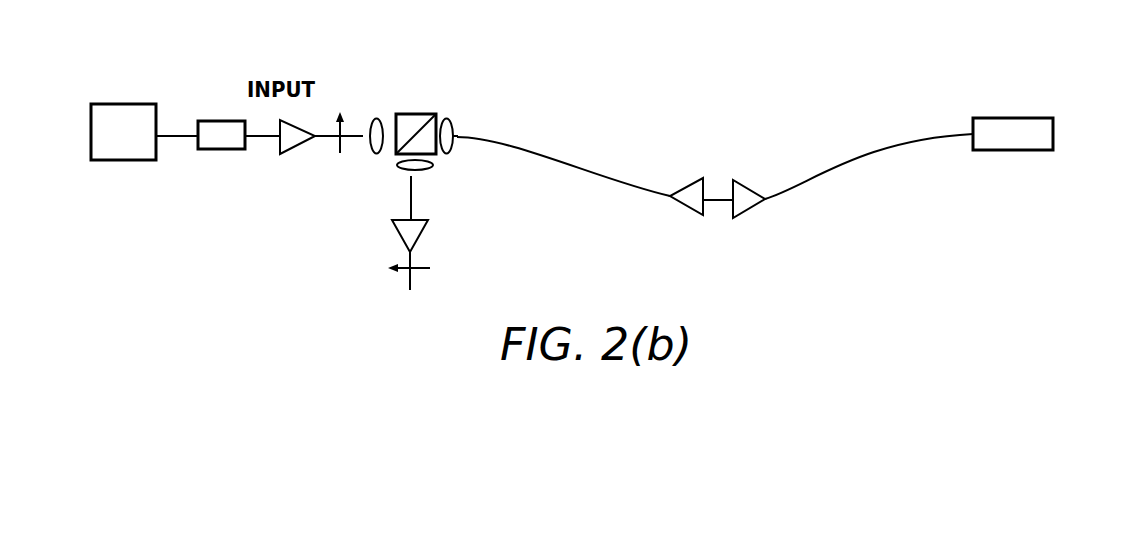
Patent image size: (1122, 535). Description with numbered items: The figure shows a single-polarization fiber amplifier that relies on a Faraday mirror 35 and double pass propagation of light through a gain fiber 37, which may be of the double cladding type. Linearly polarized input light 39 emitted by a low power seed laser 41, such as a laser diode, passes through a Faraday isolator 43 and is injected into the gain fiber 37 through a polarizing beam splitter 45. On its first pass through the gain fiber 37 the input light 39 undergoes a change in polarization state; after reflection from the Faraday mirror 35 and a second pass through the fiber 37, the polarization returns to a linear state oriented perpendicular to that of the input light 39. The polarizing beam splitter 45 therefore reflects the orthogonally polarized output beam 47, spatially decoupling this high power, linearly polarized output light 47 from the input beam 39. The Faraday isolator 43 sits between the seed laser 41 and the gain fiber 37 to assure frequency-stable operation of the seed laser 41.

The Faraday mirror 35 is at (1053, 125).
The gain fiber 37 is at (622, 186).
The input light 39 is at (178, 137).
The seed laser 41 is at (144, 97).
The Faraday isolator 43 is at (240, 176).
The polarizing beam splitter 45 is at (415, 113).
The output beam 47 is at (412, 203).